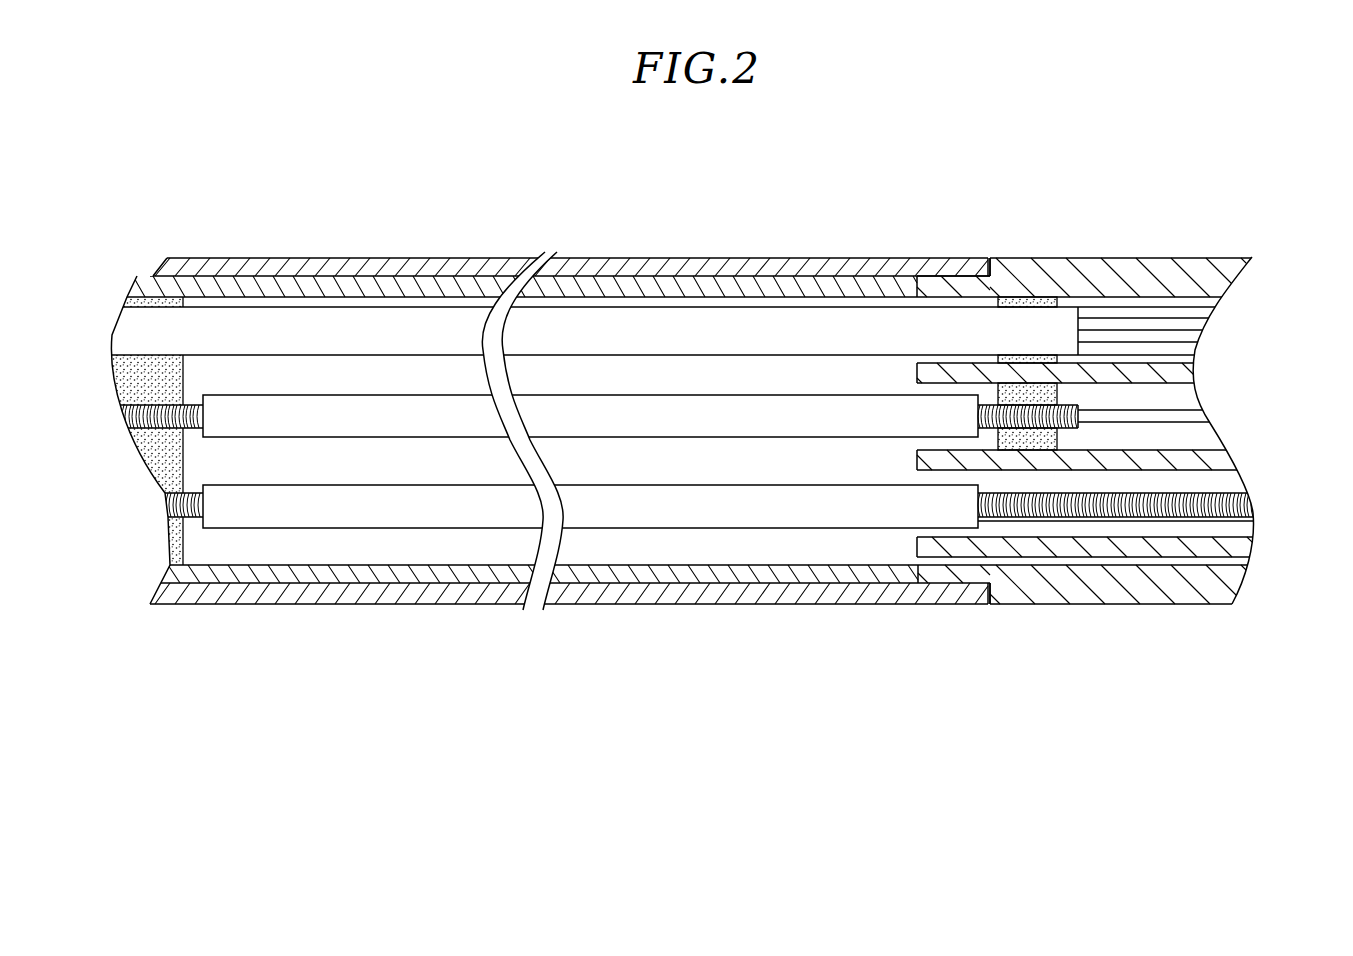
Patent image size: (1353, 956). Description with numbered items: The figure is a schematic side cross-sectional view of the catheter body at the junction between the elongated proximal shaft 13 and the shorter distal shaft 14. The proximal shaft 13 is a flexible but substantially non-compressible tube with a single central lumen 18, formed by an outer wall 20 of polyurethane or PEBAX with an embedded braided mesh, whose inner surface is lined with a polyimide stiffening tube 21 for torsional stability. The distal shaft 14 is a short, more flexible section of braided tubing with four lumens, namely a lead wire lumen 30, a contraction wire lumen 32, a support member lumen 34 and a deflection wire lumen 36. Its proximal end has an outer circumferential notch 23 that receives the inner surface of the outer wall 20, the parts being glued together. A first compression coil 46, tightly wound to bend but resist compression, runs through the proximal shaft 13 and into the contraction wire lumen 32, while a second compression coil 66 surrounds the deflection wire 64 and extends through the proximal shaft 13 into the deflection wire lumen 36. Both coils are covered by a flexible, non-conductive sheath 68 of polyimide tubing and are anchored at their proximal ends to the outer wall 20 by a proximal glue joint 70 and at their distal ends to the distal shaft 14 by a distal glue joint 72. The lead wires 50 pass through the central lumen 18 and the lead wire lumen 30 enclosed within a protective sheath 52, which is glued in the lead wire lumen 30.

The proximal shaft 13 is at (593, 620).
The distal shaft 14 is at (1120, 626).
The central lumen 18 is at (805, 455).
The outer wall 20 is at (733, 270).
The stiffening tube 21 is at (340, 272).
The outer circumferential notch 23 is at (980, 270).
The lead wire lumen 30 is at (1185, 303).
The contraction wire lumen 32 is at (1237, 527).
The support member lumen 34 is at (1237, 560).
The deflection wire lumen 36 is at (1197, 436).
The first compression coil 46 is at (165, 497).
The lead wires 50 is at (1148, 355).
The protective sheath 52 is at (670, 330).
The deflection wire 64 is at (1160, 418).
The second compression coil 66 is at (137, 403).
The non-conductive sheath 68 is at (477, 507).
The proximal glue joint 70 is at (173, 540).
The distal glue joint 72 is at (1060, 467).